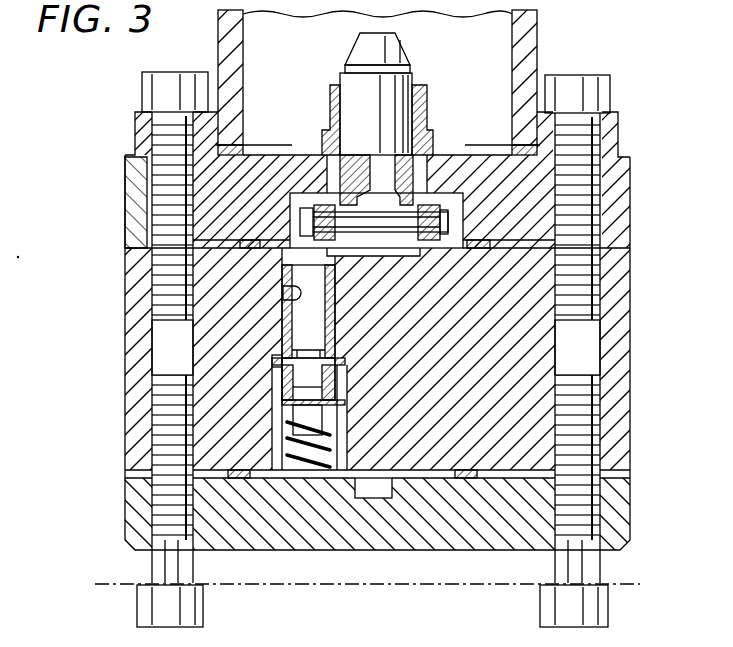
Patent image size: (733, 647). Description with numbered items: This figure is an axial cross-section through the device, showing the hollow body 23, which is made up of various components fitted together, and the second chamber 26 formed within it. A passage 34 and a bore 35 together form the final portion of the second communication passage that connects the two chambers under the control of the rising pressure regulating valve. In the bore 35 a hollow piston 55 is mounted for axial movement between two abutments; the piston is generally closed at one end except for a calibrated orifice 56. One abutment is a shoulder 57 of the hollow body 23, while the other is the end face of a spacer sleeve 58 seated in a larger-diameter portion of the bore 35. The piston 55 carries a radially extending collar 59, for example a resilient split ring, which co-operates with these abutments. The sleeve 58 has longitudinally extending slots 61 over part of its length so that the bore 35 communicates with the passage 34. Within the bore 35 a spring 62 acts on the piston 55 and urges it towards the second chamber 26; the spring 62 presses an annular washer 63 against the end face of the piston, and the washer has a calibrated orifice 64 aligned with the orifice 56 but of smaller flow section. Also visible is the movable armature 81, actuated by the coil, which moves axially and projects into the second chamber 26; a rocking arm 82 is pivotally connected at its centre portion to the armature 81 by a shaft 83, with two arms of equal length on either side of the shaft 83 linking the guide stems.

The hollow body 23 is at (634, 215).
The second chamber 26 is at (289, 203).
The passage 34 is at (371, 500).
The bore 35 is at (284, 292).
The piston 55 is at (340, 296).
The calibrated orifice 56 is at (340, 386).
The shoulder 57 is at (341, 359).
The spacer sleeve 58 is at (273, 365).
The collar 59 is at (276, 360).
The slots 61 is at (282, 479).
The spring 62 is at (347, 421).
The washer 63 is at (283, 402).
The calibrated orifice 64 is at (295, 426).
The movable armature 81 is at (414, 62).
The rocking arm 82 is at (446, 210).
The shaft 83 is at (455, 218).